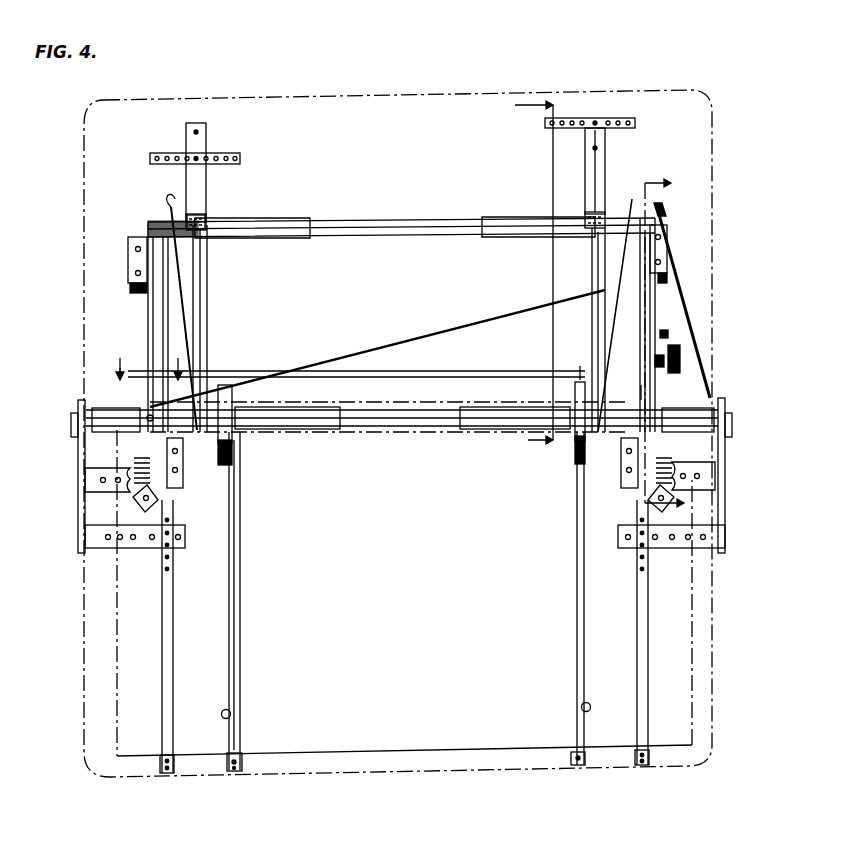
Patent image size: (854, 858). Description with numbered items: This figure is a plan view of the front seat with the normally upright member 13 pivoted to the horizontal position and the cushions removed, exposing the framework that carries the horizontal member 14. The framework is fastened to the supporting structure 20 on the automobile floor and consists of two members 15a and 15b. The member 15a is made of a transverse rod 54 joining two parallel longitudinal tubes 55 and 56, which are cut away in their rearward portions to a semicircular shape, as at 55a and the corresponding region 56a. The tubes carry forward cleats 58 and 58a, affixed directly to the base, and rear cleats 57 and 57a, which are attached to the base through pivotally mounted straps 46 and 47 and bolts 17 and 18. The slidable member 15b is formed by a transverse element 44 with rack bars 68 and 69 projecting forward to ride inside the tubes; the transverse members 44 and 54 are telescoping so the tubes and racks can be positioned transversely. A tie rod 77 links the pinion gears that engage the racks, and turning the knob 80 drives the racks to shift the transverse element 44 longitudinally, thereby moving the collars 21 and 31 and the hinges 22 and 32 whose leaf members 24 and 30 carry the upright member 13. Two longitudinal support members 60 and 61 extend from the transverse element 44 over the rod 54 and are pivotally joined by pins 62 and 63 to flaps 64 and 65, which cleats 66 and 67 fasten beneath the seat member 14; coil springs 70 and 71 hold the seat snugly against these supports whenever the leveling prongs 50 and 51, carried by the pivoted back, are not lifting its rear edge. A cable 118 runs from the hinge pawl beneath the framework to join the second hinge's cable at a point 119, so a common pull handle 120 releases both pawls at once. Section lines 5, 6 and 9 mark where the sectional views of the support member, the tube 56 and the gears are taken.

The section line 5— 5 is at (525, 274).
The section line 6— 6 is at (673, 345).
The section line 9— 9 is at (148, 359).
The upright member 13 is at (331, 773).
The horizontal member 14 is at (712, 103).
The framework member 15a is at (391, 222).
The framework member 15b is at (308, 428).
The bolt 17 is at (160, 503).
The bolt 18 is at (638, 497).
The supporting structure 20 is at (130, 288).
The collar 21 is at (78, 420).
The hinge 22 is at (72, 428).
The leaf member 24 is at (86, 504).
The leaf member 30 is at (722, 486).
The collar 31 is at (723, 400).
The hinge 32 is at (733, 425).
The transverse element 44 is at (333, 429).
The strap 46 is at (158, 497).
The strap 47 is at (648, 486).
The prong 50 is at (232, 401).
The prong 51 is at (575, 396).
The transverse rod 54 is at (431, 222).
The longitudinal tube 55 is at (150, 320).
The cut-away portion 55a is at (130, 466).
The longitudinal tube 56 is at (656, 312).
The right bracket 56a is at (690, 464).
The rear cleat 57 is at (183, 462).
The rear cleat 57a is at (621, 452).
The forward cleat 58 is at (128, 248).
The forward cleat 58a is at (667, 250).
The longitudinal support member 60 is at (206, 320).
The longitudinal support member 61 is at (592, 278).
The pin 62 is at (207, 216).
The pin 63 is at (588, 206).
The flap 64 is at (207, 190).
The flap 65 is at (588, 178).
The cleat 66 is at (213, 153).
The cleat 67 is at (616, 118).
The rack bar 68 is at (641, 392).
The rack bar 69 is at (148, 404).
The coil spring 70 is at (170, 207).
The coil spring 71 is at (632, 199).
The tie rod 77 is at (426, 371).
The knob 80 is at (680, 367).
The cable 118 is at (387, 350).
The joining point 119 is at (668, 280).
The pull handle 120 is at (666, 212).